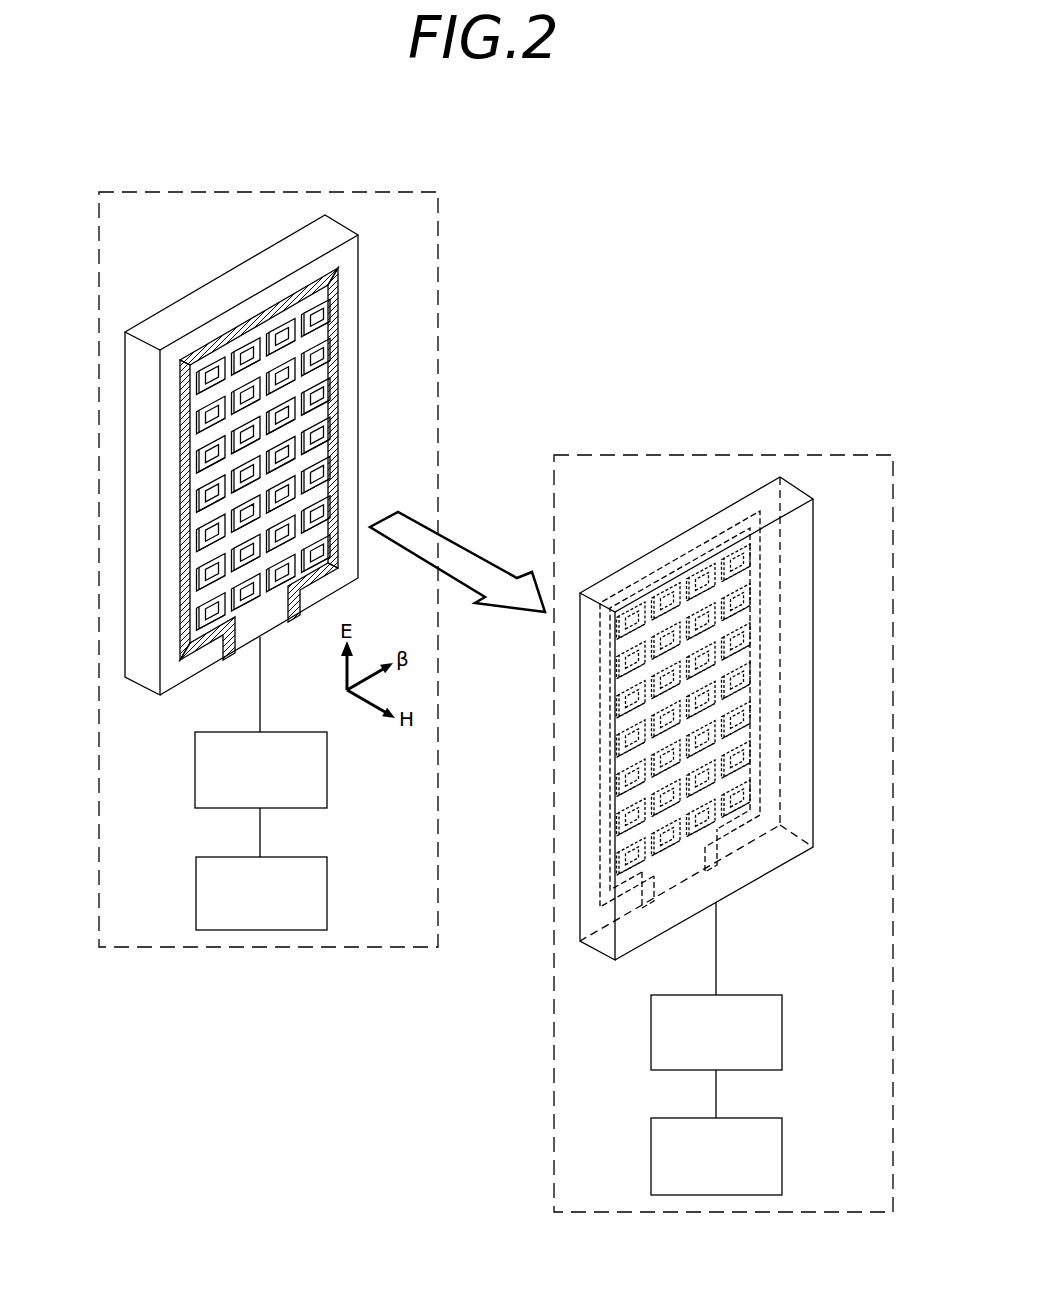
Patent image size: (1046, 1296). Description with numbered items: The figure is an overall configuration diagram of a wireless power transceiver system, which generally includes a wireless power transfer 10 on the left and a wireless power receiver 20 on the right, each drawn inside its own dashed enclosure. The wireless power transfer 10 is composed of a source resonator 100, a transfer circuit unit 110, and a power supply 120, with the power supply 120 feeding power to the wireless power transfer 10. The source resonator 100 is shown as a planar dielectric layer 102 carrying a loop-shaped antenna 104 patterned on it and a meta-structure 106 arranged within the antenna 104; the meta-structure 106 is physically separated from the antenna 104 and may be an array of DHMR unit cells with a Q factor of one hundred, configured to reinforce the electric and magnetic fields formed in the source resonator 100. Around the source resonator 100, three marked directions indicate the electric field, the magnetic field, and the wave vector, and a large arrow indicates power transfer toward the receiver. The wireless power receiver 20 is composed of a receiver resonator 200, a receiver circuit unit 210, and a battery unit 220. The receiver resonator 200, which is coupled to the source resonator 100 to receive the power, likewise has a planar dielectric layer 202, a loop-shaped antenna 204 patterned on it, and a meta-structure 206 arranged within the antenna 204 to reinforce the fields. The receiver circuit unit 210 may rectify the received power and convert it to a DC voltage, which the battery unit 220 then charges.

The wireless power transfer 10 is at (372, 190).
The source resonator 100 is at (162, 235).
The planar dielectric layer 102 is at (213, 292).
The loop-shaped antenna 104 is at (340, 333).
The meta-structure 106 is at (324, 357).
The transfer circuit unit 110 is at (297, 732).
The power supply 120 is at (297, 856).
The wireless power receiver 20 is at (829, 453).
The receiver resonator 200 is at (618, 497).
The planar dielectric layer 202 is at (664, 550).
The loop-shaped antenna 204 is at (760, 580).
The meta-structure 206 is at (738, 600).
The receiver circuit unit 210 is at (760, 995).
The battery unit 220 is at (760, 1118).